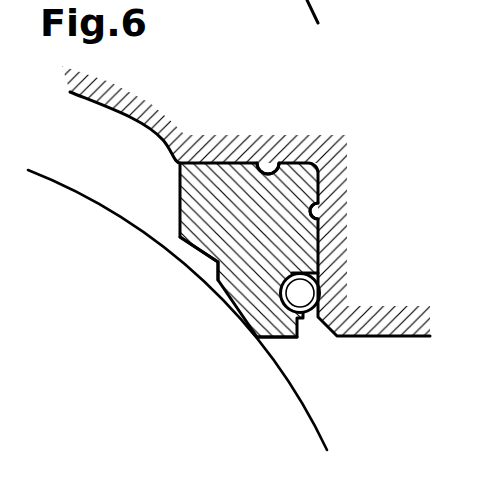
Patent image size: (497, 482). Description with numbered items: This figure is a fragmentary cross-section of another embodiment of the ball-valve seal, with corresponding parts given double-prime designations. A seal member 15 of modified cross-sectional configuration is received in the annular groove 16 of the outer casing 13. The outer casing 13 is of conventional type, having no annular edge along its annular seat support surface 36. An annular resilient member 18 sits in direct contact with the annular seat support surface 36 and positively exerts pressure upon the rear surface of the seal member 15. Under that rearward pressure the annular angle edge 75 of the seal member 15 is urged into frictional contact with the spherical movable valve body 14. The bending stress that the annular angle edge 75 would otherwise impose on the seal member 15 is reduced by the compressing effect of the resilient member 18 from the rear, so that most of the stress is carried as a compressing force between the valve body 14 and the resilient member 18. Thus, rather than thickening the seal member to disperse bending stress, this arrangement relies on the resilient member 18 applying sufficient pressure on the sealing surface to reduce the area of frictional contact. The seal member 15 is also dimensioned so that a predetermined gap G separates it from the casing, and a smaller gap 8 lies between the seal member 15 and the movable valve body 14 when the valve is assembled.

The outer casing 13 is at (396, 323).
The movable valve body 14 is at (58, 205).
The seal member 15 is at (183, 189).
The annular groove 16 is at (256, 163).
The annular seat support surface 36 is at (322, 220).
The annular resilient member 18 is at (320, 280).
The annular angle edge 75 is at (258, 337).
The stepped edge 8 is at (187, 253).
The gap G is at (310, 327).